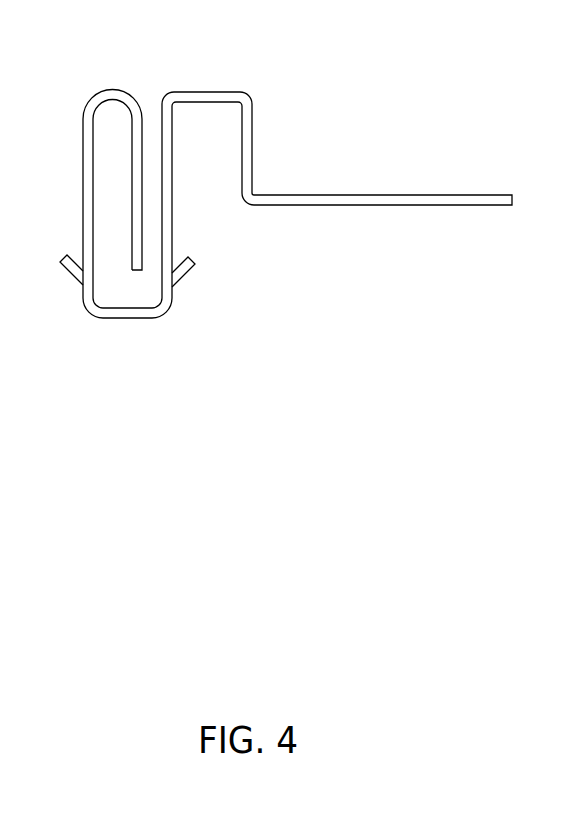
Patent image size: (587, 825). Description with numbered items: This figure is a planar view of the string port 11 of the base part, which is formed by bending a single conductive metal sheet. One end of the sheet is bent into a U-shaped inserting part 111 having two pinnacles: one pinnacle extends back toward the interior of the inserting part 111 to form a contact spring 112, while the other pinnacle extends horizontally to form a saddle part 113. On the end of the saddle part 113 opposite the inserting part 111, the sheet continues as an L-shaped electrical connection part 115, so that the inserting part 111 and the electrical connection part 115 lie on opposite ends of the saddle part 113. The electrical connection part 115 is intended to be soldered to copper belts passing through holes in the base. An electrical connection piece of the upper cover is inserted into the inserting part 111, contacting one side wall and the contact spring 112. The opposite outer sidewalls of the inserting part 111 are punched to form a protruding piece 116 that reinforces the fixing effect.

The string port 11 is at (271, 202).
The inserting part 111 is at (132, 315).
The contact spring 112 is at (135, 187).
The saddle part 113 is at (203, 97).
The electrical connection part 115 is at (379, 198).
The protruding piece 116 is at (182, 270).